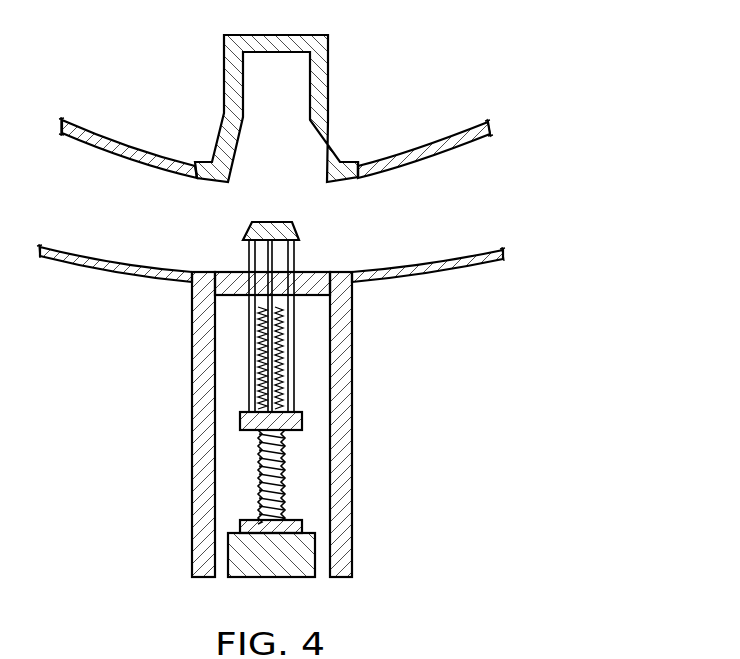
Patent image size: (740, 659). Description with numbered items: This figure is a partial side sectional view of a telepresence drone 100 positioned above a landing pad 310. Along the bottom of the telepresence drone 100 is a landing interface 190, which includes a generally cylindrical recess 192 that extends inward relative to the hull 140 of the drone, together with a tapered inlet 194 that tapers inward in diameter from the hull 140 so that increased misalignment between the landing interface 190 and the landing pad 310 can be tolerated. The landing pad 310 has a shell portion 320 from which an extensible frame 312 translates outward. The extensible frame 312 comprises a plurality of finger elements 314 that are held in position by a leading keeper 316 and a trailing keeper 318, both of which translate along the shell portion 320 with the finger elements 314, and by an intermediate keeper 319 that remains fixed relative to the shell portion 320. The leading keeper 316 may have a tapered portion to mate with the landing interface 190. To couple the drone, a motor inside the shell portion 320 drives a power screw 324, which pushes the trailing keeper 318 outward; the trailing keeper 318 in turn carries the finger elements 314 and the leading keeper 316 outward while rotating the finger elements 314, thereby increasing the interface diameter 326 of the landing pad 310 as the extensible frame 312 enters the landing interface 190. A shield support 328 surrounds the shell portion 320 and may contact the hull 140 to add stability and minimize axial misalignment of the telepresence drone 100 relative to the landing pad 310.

The telepresence drone 100 is at (587, 97).
The hull 140 is at (447, 157).
The landing interface 190 is at (222, 188).
The cylindrical recess 192 is at (312, 92).
The tapered inlet 194 is at (325, 145).
The landing pad 310 is at (298, 383).
The extensible frame 312 is at (264, 383).
The finger elements 314 is at (249, 375).
The leading keeper 316 is at (247, 232).
The trailing keeper 318 is at (242, 423).
The intermediate keeper 319 is at (325, 277).
The shell portion 320 is at (352, 465).
The power screw 324 is at (258, 498).
The interface diameter 326 is at (233, 342).
The shield support 328 is at (503, 260).